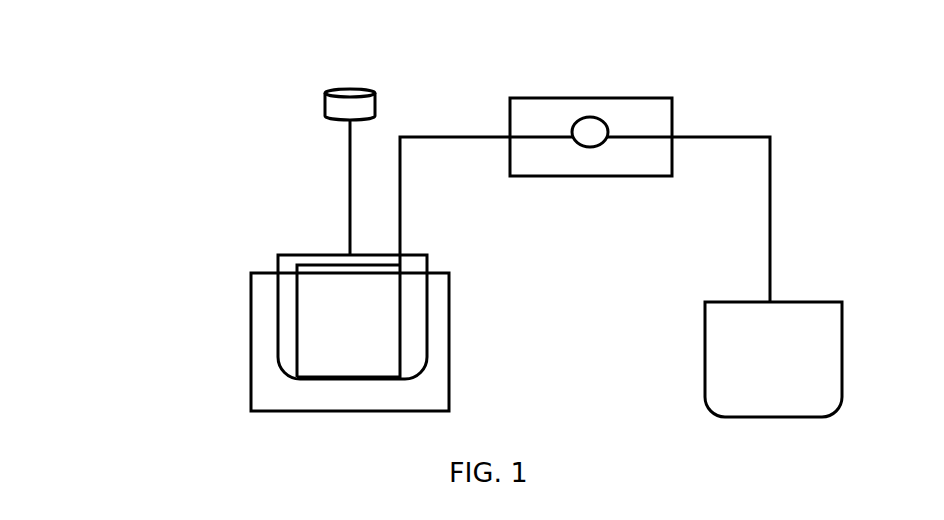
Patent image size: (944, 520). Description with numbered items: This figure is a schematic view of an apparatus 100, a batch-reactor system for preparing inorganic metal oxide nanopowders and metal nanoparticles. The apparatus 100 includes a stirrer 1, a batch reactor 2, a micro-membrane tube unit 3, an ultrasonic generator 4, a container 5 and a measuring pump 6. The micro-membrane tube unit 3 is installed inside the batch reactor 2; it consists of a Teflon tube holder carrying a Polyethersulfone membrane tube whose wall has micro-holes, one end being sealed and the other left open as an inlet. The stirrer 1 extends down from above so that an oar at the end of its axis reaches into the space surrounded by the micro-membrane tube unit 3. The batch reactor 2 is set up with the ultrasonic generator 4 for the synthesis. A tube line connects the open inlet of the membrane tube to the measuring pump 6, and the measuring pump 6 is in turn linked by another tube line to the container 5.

The apparatus 100 is at (74, 40).
The stirrer 1 is at (353, 87).
The batch reactor 2 is at (278, 253).
The micro-membrane tube unit 3 is at (292, 342).
The ultrasonic generator 4 is at (452, 338).
The container 5 is at (802, 300).
The measuring pump 6 is at (573, 120).